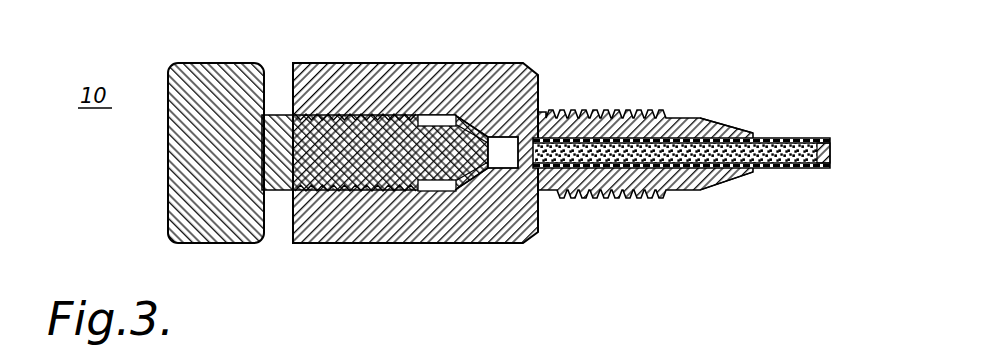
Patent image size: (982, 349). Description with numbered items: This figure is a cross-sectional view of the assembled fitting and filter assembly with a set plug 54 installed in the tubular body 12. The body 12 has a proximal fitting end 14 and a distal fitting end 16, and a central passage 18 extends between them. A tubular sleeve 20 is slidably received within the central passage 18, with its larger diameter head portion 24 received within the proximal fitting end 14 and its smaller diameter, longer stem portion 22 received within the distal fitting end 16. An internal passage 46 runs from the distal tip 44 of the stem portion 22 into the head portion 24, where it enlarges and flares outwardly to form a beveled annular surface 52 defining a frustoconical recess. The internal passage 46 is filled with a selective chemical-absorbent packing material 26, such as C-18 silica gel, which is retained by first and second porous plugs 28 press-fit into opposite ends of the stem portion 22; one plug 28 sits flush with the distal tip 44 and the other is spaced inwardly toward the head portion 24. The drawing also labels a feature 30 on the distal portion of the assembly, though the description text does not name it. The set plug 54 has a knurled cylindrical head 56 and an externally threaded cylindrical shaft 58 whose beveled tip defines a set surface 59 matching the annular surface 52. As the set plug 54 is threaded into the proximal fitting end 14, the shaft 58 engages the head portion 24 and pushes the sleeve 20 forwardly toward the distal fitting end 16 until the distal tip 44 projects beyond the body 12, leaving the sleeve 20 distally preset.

The tubular body 12 is at (647, 155).
The proximal fitting end 14 is at (523, 45).
The distal fitting end 16 is at (598, 224).
The central passage 18 is at (423, 192).
The tubular sleeve 20 is at (771, 116).
The stem portion 22 is at (708, 146).
The head portion 24 is at (517, 193).
The packing material 26 is at (663, 118).
The porous plugs 28 is at (543, 88).
The tapered end 30 is at (723, 184).
The distal tip 44 is at (830, 142).
The internal passage 46 is at (643, 198).
The beveled annular surface 52 is at (457, 193).
The set plug 54 is at (193, 178).
The knurled cylindrical head 56 is at (228, 232).
The externally threaded cylindrical shaft 58 is at (347, 133).
The set surface 59 is at (452, 122).